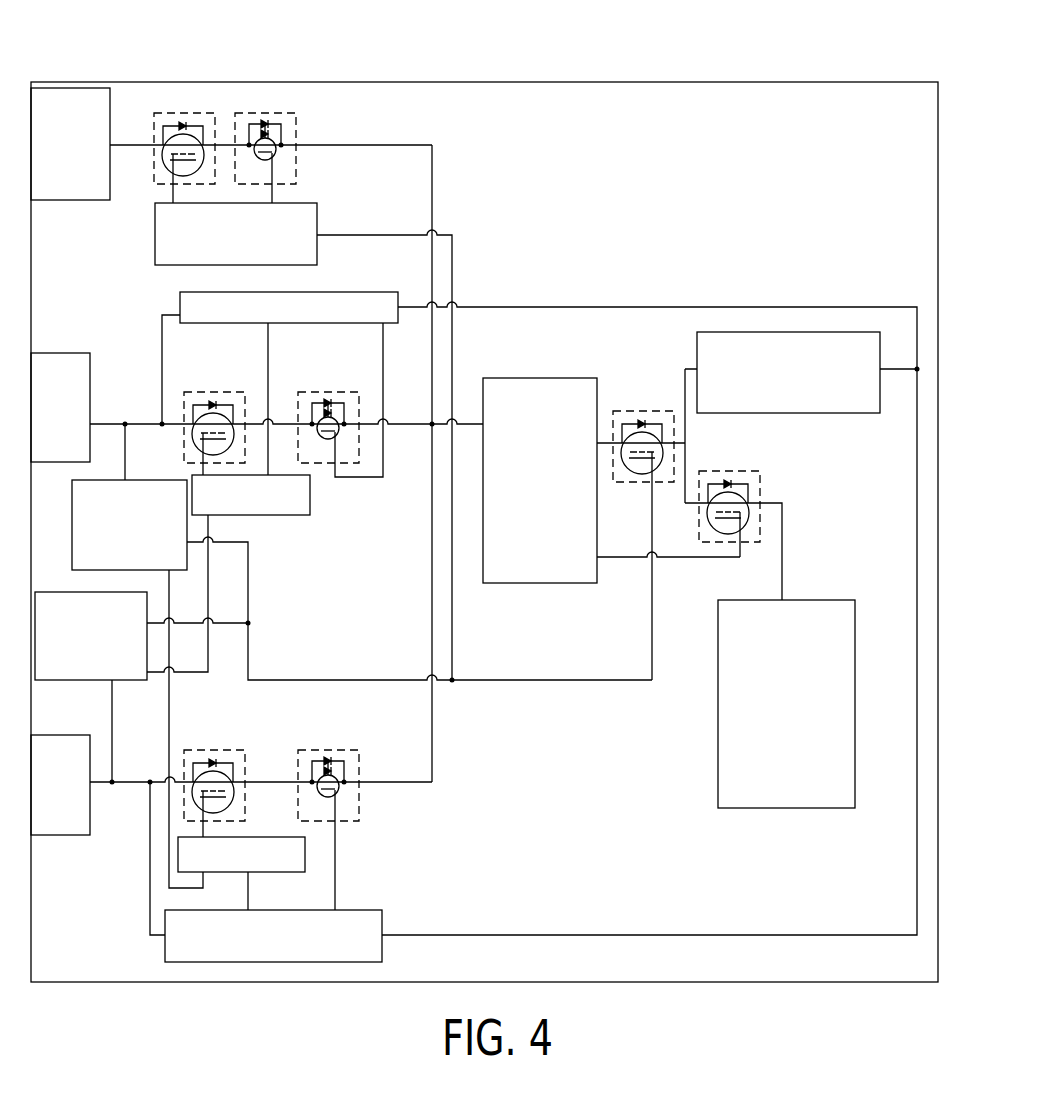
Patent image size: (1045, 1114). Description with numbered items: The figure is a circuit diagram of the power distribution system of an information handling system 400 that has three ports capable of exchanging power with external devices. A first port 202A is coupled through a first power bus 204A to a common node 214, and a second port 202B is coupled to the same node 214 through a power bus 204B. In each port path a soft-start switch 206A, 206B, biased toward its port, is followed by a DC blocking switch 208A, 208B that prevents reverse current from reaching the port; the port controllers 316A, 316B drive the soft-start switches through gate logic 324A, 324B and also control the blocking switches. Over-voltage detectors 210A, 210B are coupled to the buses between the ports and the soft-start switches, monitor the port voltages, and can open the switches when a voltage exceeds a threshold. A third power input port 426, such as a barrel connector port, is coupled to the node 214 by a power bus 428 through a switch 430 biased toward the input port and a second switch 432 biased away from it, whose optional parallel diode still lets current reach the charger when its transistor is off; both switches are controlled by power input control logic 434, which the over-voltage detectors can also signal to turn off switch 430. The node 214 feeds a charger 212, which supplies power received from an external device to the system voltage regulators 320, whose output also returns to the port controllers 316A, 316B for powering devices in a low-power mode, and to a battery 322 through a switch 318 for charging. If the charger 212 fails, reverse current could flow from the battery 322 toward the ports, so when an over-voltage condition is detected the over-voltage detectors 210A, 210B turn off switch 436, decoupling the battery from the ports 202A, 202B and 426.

The information handling system 400 is at (623, 66).
The power input port 426 is at (63, 202).
The power bus 428 is at (142, 148).
The switch 430 is at (191, 110).
The switch 432 is at (270, 110).
The power input control logic 434 is at (155, 244).
The port controller 316A is at (180, 312).
The port controller 316B is at (362, 908).
The first port 202A is at (53, 352).
The second port 202B is at (76, 838).
The first power bus 204A is at (103, 423).
The power bus 204B is at (112, 790).
The first switch 206A is at (198, 390).
The switch 206B is at (196, 745).
The switch 208A is at (323, 390).
The switch 208B is at (323, 745).
The over-voltage detector 210A is at (188, 553).
The over-voltage detector 210B is at (127, 684).
The gate logic 324A is at (311, 498).
The gate logic 324B is at (249, 836).
The node 214 is at (428, 432).
The charger 212 is at (537, 586).
The switch 436 is at (625, 406).
The switch 318 is at (760, 487).
The system voltage regulators 320 is at (843, 415).
The battery 322 is at (718, 742).